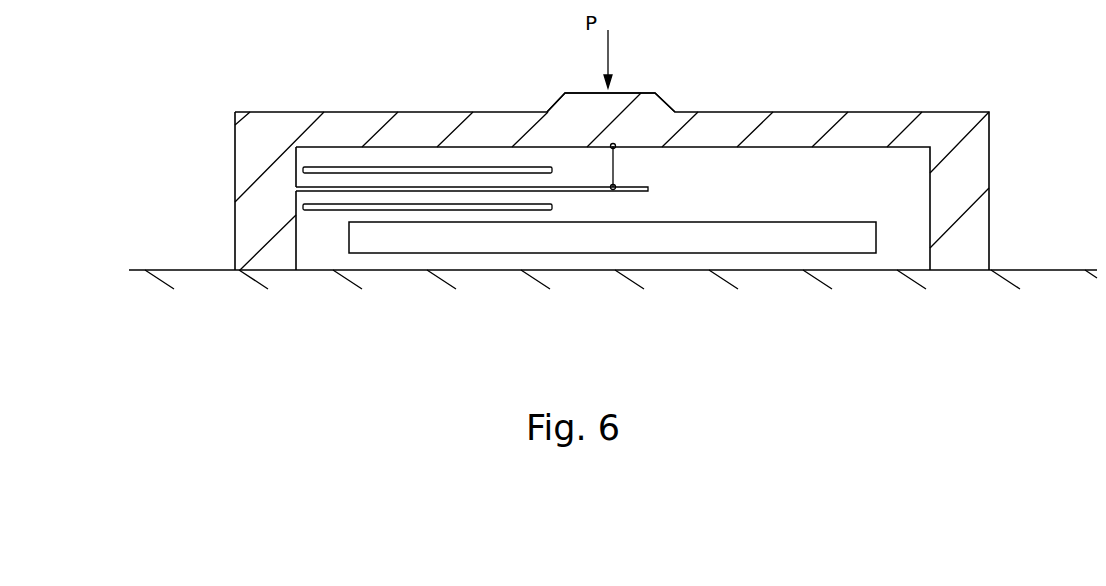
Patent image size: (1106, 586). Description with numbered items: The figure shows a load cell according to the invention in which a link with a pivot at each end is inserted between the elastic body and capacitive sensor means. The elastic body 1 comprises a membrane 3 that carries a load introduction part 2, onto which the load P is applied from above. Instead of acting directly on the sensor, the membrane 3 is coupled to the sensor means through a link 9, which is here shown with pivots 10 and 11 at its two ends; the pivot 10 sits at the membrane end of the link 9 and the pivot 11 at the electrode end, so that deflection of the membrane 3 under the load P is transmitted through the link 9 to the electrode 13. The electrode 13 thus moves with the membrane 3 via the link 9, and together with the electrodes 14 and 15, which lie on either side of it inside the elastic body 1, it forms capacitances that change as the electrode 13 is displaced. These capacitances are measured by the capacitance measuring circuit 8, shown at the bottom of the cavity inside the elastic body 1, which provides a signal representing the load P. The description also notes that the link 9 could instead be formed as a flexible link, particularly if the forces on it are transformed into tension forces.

The elastic body 1 is at (963, 184).
The load introduction part 2 is at (653, 93).
The membrane 3 is at (401, 131).
The capacitance measuring circuit 8 is at (612, 237).
The link 9 is at (622, 165).
The pivot 10 is at (616, 145).
The pivot 11 is at (616, 188).
The electrode 13 is at (313, 187).
The electrode 14 is at (313, 166).
The electrode 15 is at (303, 208).